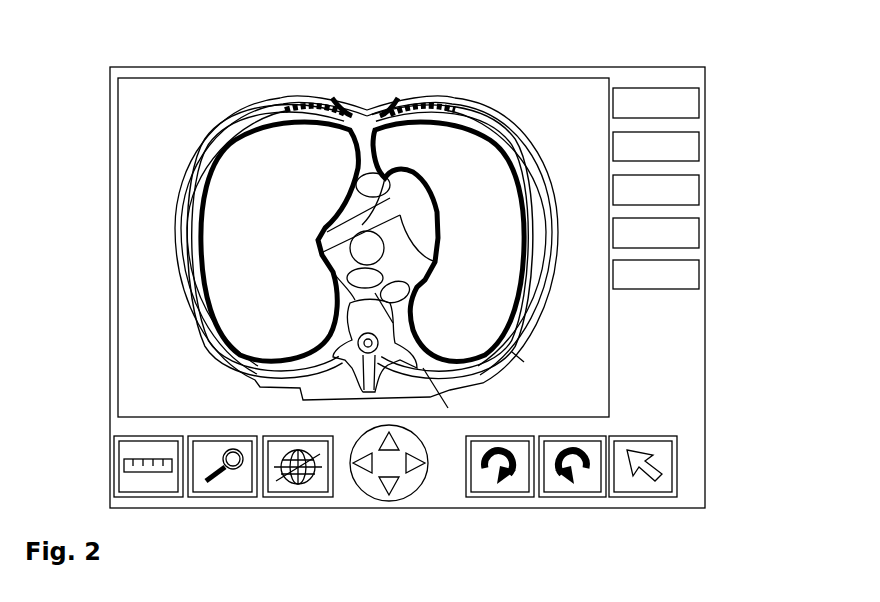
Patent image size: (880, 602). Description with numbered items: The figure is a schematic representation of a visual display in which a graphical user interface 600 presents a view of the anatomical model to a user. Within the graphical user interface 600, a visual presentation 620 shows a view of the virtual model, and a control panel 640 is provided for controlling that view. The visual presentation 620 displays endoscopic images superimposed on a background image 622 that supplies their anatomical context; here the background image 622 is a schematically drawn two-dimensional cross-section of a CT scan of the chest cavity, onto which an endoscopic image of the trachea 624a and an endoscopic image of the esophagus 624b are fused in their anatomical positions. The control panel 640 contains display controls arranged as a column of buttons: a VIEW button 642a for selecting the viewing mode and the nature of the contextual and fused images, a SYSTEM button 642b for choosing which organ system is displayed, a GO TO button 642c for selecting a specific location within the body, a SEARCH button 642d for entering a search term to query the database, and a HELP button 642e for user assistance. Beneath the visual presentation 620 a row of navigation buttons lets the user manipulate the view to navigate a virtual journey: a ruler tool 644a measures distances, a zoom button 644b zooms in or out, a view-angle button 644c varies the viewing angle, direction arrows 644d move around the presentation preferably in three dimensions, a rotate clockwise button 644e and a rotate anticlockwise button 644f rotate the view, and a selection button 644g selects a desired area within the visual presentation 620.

The graphical user interface 600 is at (120, 47).
The visual presentation 620 is at (146, 114).
The background image 622 is at (517, 132).
The endoscopic image of the trachea 624a is at (362, 248).
The endoscopic image of the esophagus 624b is at (358, 277).
The control panel 640 is at (686, 227).
The VIEW button 642a is at (700, 94).
The SYSTEM button 642b is at (700, 140).
The GO TO button 642c is at (700, 184).
The SEARCH button 642d is at (700, 228).
The HELP button 642e is at (692, 275).
The ruler tool 644a is at (148, 483).
The zoom button 644b is at (240, 483).
The view-angle button 644c is at (318, 483).
The direction arrows 644d is at (403, 480).
The rotate clockwise button 644e is at (480, 483).
The rotate anticlockwise button 644f is at (550, 483).
The selection button 644g is at (635, 483).